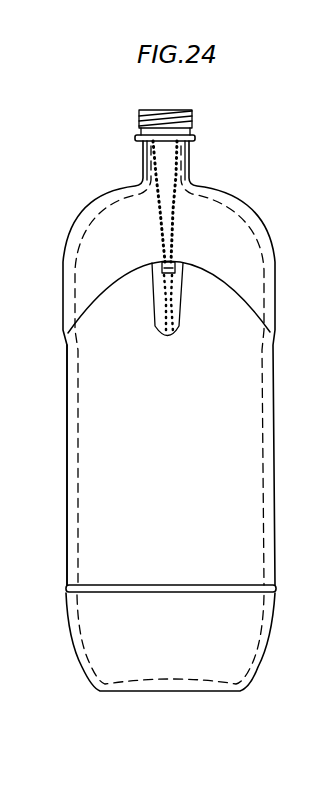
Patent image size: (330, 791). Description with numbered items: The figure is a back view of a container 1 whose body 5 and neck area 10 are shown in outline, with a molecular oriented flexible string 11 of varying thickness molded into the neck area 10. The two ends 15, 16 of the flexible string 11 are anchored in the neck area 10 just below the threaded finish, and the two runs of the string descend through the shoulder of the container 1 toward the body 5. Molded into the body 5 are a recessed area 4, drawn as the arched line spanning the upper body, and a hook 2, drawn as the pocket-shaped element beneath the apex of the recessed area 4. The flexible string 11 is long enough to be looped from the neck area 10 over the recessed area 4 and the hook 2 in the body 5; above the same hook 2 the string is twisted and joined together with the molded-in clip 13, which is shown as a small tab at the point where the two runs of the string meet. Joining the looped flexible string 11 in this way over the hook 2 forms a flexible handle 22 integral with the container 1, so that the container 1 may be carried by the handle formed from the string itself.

The container 1 is at (242, 203).
The hook 2 is at (180, 322).
The recessed area 4 is at (213, 270).
The body 5 is at (67, 378).
The neck area 10 is at (140, 137).
The flexible string 11 is at (175, 210).
The clip 13 is at (177, 264).
The end of flexible string 15 is at (147, 148).
The end of flexible string 16 is at (185, 145).
The flexible handle 22 is at (160, 202).